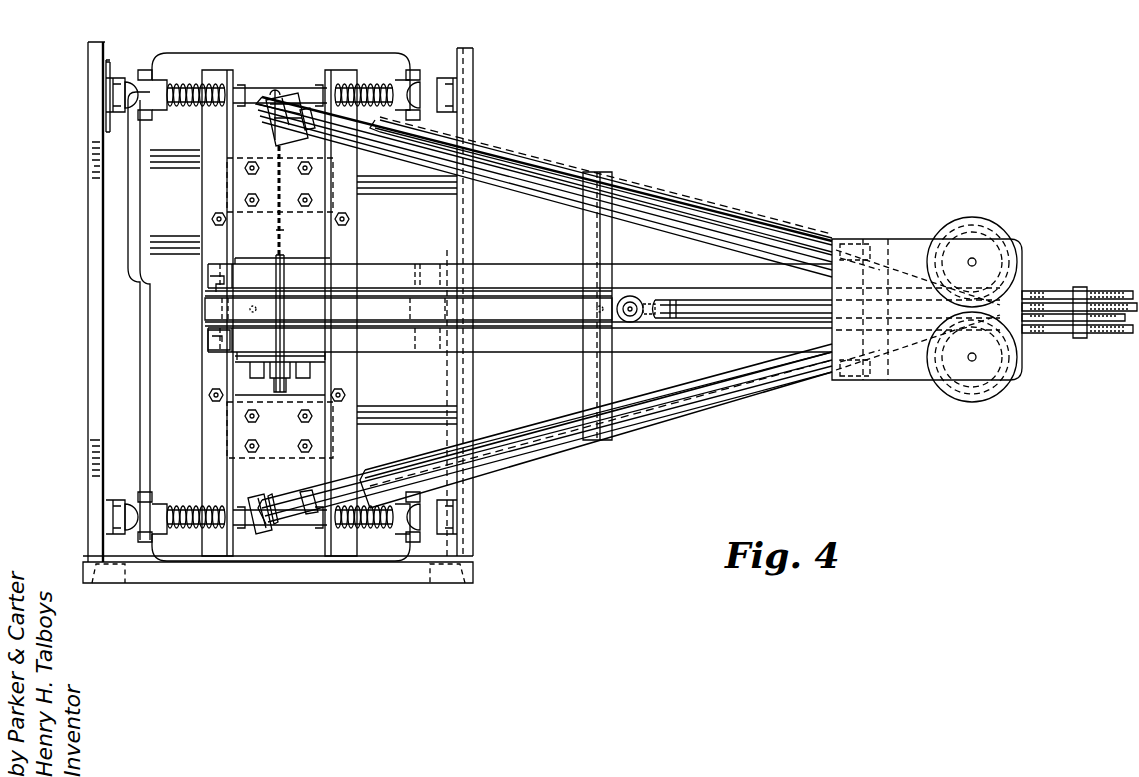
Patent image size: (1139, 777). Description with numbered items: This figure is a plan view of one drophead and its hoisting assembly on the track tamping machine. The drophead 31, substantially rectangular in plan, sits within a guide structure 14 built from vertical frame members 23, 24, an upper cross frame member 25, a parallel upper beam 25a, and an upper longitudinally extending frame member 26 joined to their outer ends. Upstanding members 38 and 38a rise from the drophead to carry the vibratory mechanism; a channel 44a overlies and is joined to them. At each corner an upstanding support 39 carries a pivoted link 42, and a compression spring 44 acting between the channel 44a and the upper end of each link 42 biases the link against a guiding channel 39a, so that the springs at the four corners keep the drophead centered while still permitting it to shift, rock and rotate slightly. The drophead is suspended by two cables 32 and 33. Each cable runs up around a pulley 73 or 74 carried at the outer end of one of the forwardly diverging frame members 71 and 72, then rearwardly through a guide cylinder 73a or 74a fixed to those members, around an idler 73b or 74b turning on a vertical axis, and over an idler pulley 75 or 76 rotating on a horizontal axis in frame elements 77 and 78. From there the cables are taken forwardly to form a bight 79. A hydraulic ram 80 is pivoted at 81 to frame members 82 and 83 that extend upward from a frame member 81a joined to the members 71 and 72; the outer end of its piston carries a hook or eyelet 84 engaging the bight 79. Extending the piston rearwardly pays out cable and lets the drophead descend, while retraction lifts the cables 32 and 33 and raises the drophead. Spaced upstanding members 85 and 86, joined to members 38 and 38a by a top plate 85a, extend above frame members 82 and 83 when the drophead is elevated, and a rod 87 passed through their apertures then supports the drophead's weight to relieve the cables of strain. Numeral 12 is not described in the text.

The beam 12 is at (696, 196).
The guide structure 14 is at (78, 406).
The vertical frame member 23 is at (445, 586).
The vertical frame member 24 is at (108, 586).
The upper cross frame member 25 is at (88, 222).
The upper beam 25a is at (474, 490).
The upper longitudinally extending frame member 26 is at (400, 586).
The drophead 31 is at (150, 297).
The cable 32 is at (300, 516).
The cable 33 is at (288, 98).
The upstanding member 38 is at (228, 432).
The upstanding member 38a is at (228, 196).
The upstanding support 39 is at (243, 90).
The guiding channel 39a is at (114, 92).
The link 42 is at (126, 94).
The compression spring 44 is at (175, 84).
The channel 44a is at (210, 140).
The frame member 71 is at (506, 438).
The frame member 72 is at (530, 196).
The pulley 73 is at (306, 520).
The guide cylinder 73a is at (540, 462).
The idler 73b is at (978, 402).
The pulley 74 is at (278, 96).
The guide cylinder 74a is at (520, 160).
The idler 74b is at (965, 218).
The idler pulley 75 is at (1062, 326).
The idler pulley 76 is at (1104, 300).
The frame element 77 is at (1118, 336).
The frame element 78 is at (1048, 290).
The bight 79 is at (692, 312).
The hydraulic ram 80 is at (540, 352).
The pivot 81 is at (222, 345).
The frame member 81a is at (612, 258).
The frame member 82 is at (245, 330).
The frame member 83 is at (205, 275).
The hook or eyelet 84 is at (645, 322).
The upstanding member 85 is at (325, 372).
The top plate 85a is at (265, 432).
The upstanding member 86 is at (330, 252).
The rod 87 is at (272, 386).